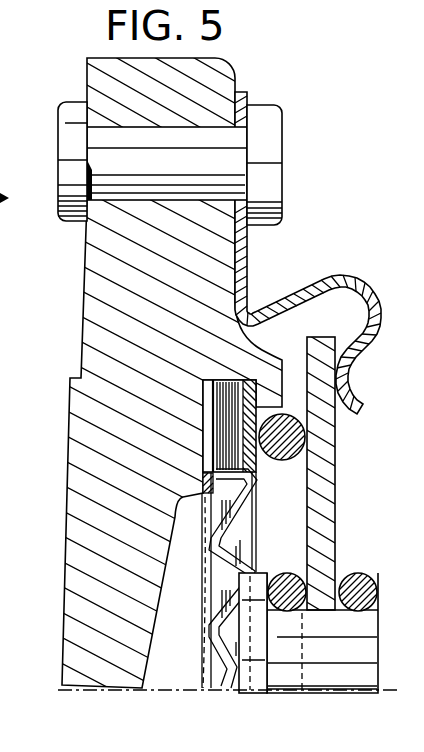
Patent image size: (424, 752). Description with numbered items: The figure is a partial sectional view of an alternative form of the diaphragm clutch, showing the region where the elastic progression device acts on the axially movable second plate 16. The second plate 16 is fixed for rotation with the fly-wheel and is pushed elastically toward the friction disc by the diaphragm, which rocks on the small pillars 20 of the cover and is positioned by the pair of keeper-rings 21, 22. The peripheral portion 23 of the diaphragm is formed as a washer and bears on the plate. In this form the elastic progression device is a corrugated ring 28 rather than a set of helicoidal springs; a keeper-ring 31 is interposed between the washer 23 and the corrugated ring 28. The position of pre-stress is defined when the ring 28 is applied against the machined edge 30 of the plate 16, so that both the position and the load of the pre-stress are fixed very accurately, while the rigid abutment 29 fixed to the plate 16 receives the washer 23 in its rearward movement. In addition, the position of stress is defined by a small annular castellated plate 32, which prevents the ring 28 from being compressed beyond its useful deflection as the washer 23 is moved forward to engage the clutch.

The second plate 16 is at (83, 272).
The small pillars 20 is at (357, 651).
The keeper-ring 21 is at (288, 574).
The keeper-ring 22 is at (363, 576).
The peripheral portion 23 is at (323, 498).
The corrugated ring 28 is at (213, 590).
The rigid abutment 29 is at (348, 387).
The edge 30 is at (238, 388).
The keeper-ring 31 is at (292, 440).
The annular castellated plate 32 is at (203, 495).